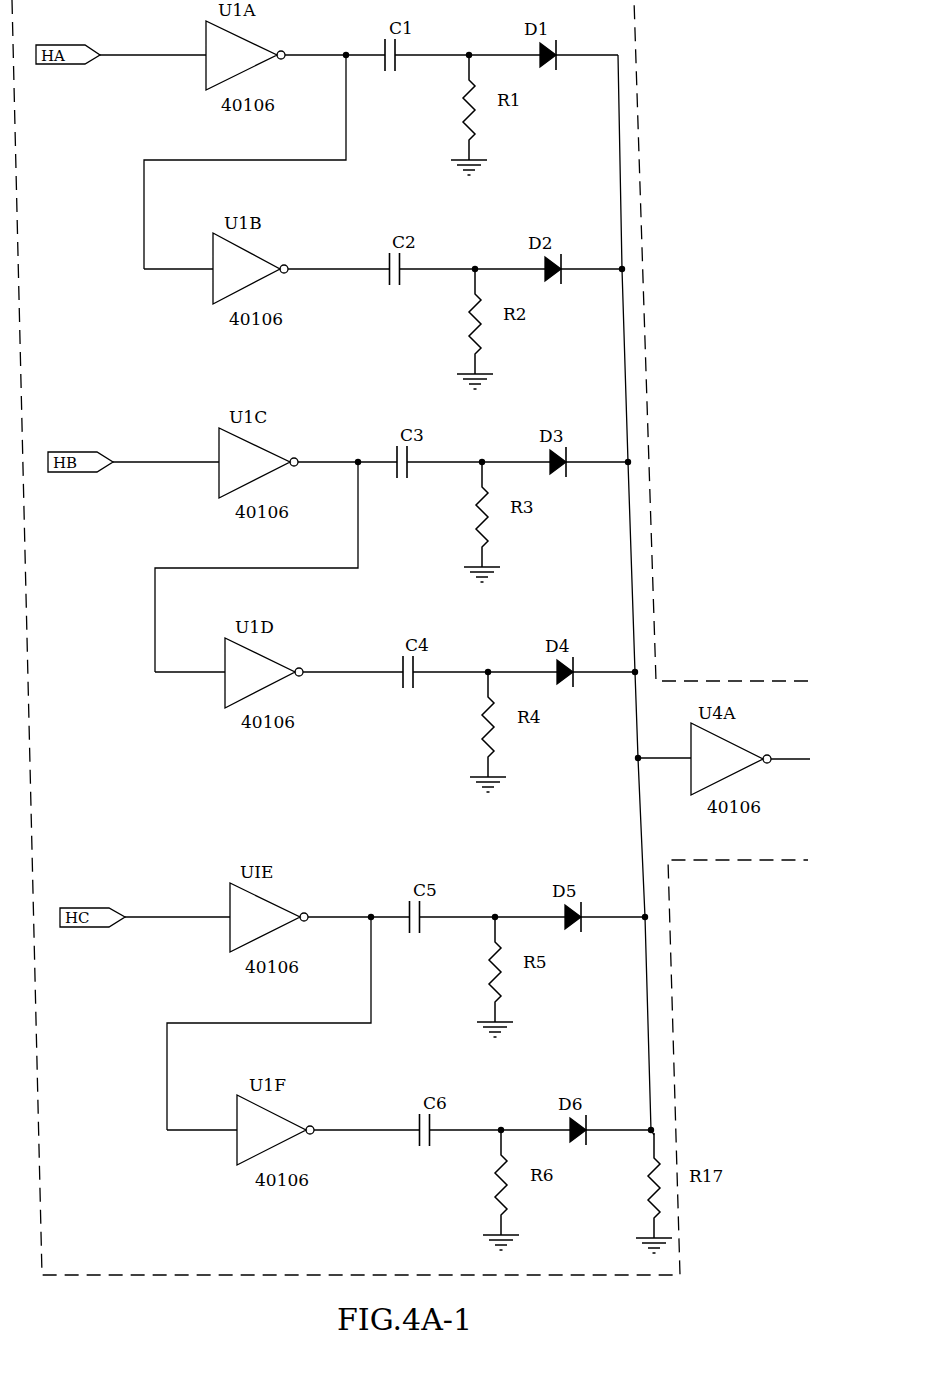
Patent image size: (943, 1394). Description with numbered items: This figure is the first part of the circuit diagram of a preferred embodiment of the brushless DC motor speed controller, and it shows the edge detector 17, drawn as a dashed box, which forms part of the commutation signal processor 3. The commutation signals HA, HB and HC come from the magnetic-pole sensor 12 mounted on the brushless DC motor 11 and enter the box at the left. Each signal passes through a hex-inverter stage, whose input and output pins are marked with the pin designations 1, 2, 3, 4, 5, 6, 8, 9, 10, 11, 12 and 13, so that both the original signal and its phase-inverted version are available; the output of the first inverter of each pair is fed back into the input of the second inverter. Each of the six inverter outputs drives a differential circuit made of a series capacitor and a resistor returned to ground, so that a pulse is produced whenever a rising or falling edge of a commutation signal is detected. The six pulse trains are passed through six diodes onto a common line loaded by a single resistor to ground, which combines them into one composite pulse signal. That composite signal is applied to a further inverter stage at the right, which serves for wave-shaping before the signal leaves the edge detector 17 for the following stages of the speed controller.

The inverter input pin 1 is at (435, 408).
The inverter output pin 2 is at (547, 397).
The commutation signal processor 3 is at (216, 268).
The inverter U1B output pin 4 is at (339, 260).
The inverter U1C input pin 5 is at (205, 463).
The inverter U1C output pin 6 is at (347, 452).
The inverter U1D output pin 8 is at (353, 662).
The inverter U1D input pin 9 is at (229, 673).
The inverter U1E output pin 10 is at (359, 907).
The brushless DC motor 11 is at (216, 917).
The magnetic-pole sensor 12 is at (367, 1120).
The inverter U1F input pin 13 is at (240, 1130).
The edge detector 17 is at (642, 218).